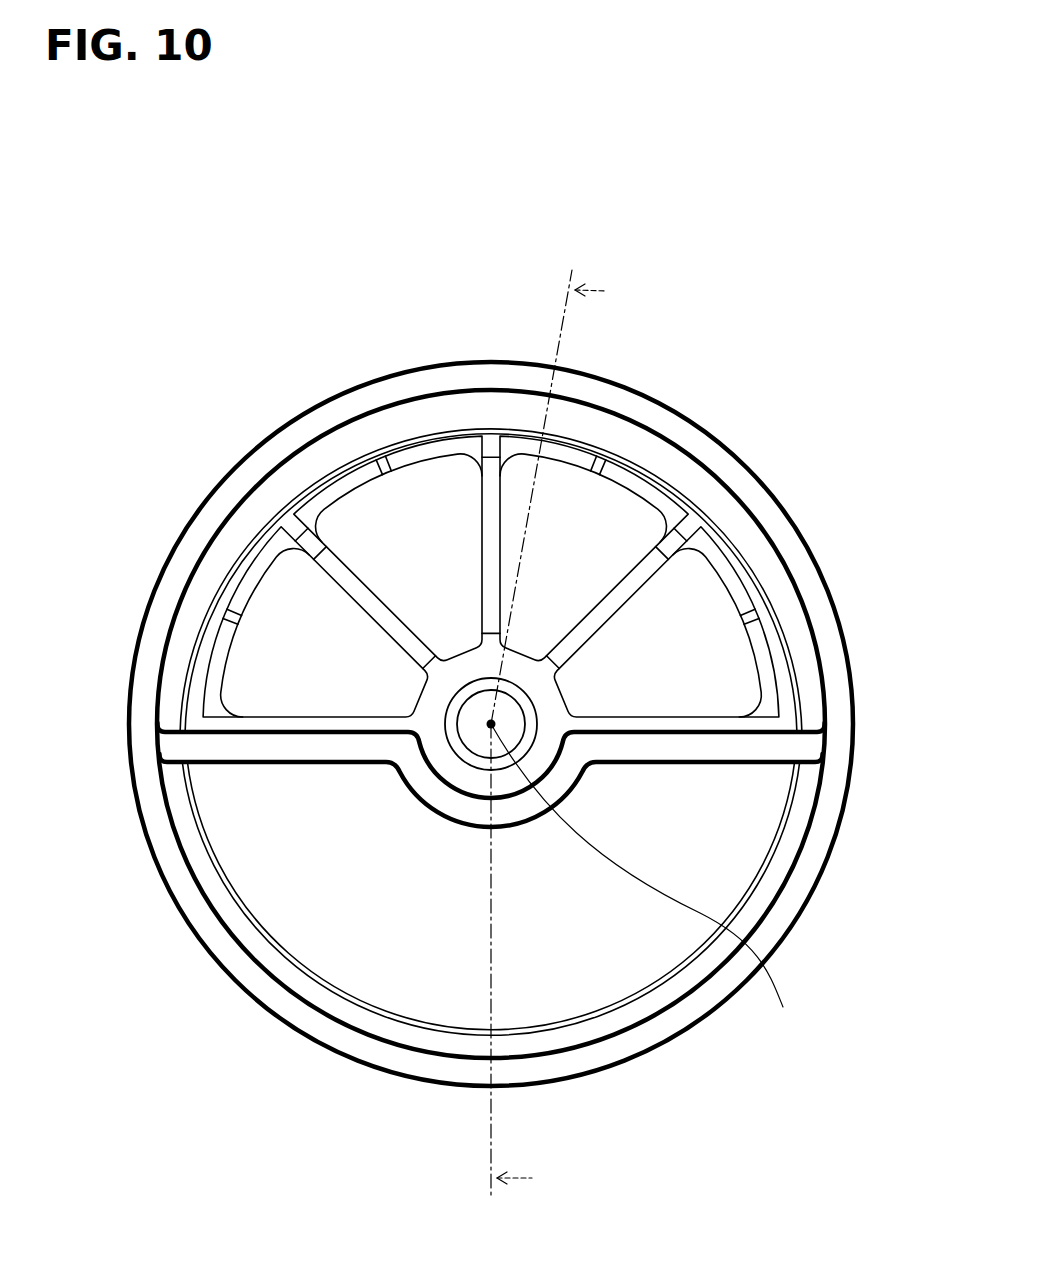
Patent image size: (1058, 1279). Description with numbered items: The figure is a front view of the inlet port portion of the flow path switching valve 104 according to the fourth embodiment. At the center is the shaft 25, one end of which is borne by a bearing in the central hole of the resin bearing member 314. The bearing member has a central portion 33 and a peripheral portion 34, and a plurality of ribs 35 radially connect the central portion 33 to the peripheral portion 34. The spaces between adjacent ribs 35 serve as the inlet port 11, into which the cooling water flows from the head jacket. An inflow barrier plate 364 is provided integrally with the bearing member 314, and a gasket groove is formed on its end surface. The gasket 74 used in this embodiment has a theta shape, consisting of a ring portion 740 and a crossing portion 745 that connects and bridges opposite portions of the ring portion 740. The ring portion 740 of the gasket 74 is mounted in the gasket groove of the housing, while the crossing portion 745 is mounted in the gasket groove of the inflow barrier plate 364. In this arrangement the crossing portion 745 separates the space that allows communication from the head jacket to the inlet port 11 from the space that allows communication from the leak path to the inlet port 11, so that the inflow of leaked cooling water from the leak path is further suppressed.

The flow path switching valve 104 is at (508, 733).
The gasket 74 is at (775, 392).
The ring portion 740 is at (415, 392).
The peripheral portion 34 is at (340, 470).
The inlet port 11 is at (308, 648).
The rib 35 is at (484, 523).
The central portion 33 is at (461, 670).
The shaft 25 is at (508, 718).
The crossing portion 745 is at (325, 746).
The inflow barrier plate 364 is at (402, 827).
The bearing member 314 is at (683, 787).